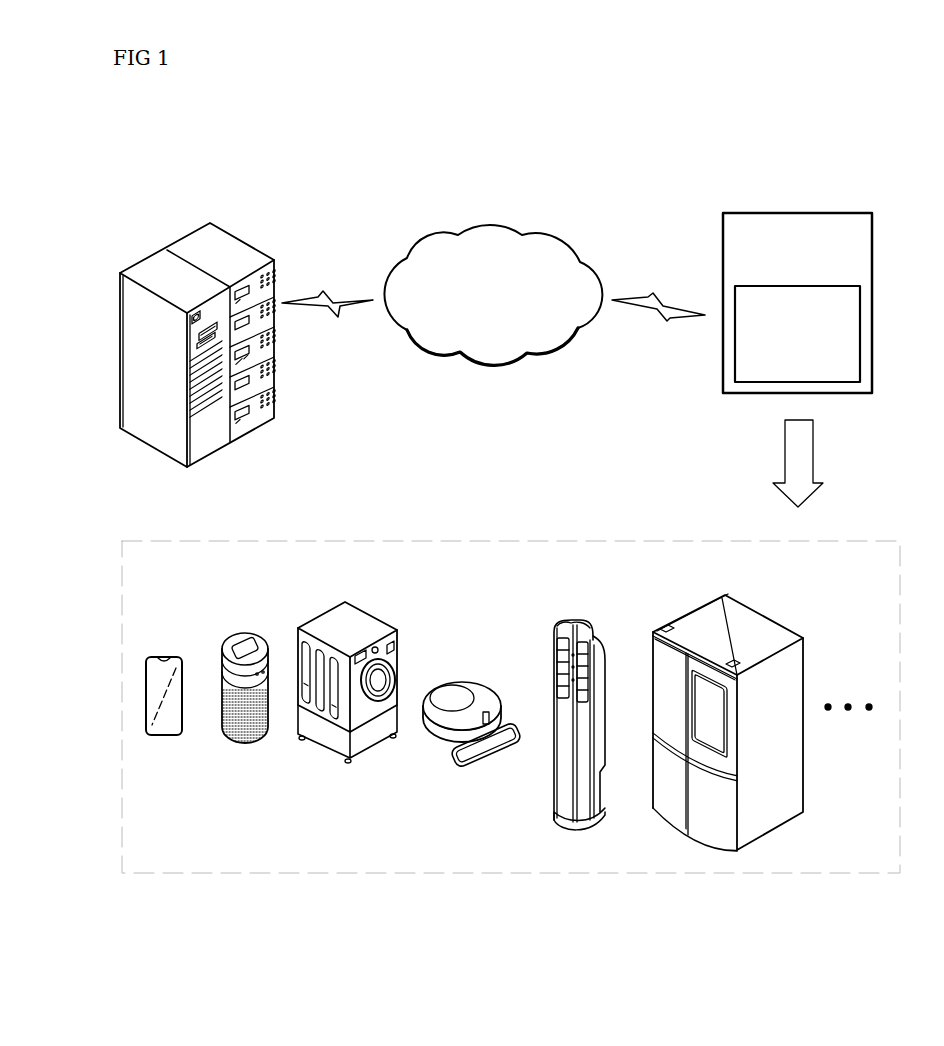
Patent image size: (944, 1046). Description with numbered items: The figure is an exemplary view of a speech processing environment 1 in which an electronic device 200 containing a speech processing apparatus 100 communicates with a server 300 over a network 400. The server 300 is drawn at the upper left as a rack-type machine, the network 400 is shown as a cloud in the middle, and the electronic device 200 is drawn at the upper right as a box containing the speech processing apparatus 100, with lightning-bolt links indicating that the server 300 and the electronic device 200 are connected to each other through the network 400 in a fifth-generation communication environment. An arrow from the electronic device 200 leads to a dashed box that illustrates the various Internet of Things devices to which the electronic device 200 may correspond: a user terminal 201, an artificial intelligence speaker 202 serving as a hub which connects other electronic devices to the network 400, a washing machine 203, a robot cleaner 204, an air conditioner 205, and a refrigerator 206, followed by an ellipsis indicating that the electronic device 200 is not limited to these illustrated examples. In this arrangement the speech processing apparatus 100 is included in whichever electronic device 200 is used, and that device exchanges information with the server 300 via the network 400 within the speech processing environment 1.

The speech processing environment 1 is at (177, 125).
The speech processing apparatus 100 is at (860, 332).
The electronic device 200 is at (873, 230).
The user terminal 201 is at (168, 657).
The artificial intelligence speaker 202 is at (244, 637).
The washing machine 203 is at (364, 612).
The robot cleaner 204 is at (477, 690).
The air conditioner 205 is at (574, 627).
The refrigerator 206 is at (765, 613).
The server 300 is at (187, 250).
The network 400 is at (538, 236).